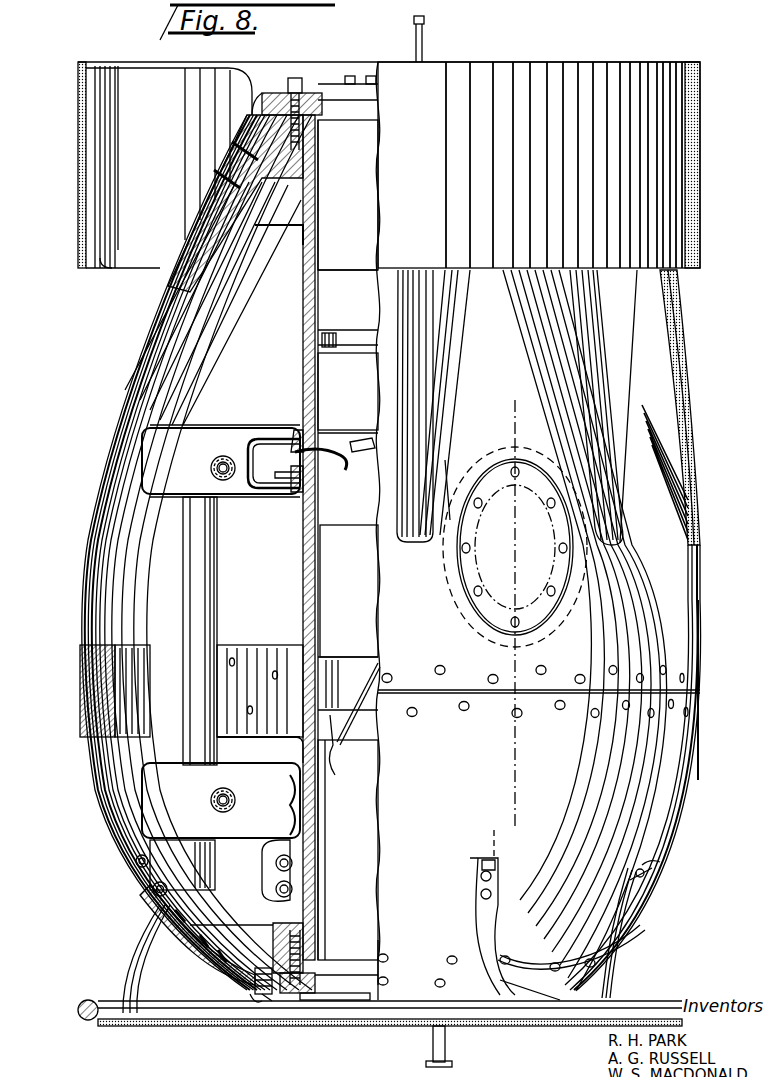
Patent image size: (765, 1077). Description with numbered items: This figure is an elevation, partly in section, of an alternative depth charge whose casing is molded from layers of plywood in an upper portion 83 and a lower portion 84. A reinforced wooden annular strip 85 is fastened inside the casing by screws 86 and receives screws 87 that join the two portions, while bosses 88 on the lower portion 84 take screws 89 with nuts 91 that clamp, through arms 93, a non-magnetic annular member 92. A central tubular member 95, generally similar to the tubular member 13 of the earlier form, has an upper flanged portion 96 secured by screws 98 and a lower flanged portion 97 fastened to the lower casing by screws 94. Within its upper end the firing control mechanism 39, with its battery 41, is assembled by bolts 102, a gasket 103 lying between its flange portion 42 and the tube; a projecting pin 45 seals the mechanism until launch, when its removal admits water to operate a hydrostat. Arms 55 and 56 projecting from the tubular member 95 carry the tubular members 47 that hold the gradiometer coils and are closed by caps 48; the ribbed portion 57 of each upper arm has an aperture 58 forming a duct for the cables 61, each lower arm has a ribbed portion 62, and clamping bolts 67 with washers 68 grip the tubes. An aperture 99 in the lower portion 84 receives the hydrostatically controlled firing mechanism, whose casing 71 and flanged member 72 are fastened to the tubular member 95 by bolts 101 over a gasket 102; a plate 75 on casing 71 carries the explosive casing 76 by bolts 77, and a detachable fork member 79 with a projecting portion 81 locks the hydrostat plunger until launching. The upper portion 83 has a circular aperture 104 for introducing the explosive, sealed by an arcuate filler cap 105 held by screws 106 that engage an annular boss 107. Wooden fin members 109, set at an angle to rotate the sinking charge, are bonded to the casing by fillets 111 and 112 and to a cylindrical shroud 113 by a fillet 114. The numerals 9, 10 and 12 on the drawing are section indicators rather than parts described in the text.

The section line 9- 9 is at (522, 434).
The section line 10- 10 is at (485, 828).
The section line 12- 12 is at (537, 410).
The tubular member 13 is at (612, 108).
The firing control mechanism 39 is at (348, 195).
The battery 41 is at (348, 381).
The flange portion 42 is at (292, 82).
The projecting pin 45 is at (426, 24).
The tubular members 47 is at (216, 583).
The caps 48 is at (212, 425).
The arms 55 is at (262, 440).
The arms 56 is at (265, 778).
The ribbed portion 57 is at (278, 492).
The aperture 58 is at (298, 432).
The cables 61 is at (333, 482).
The ribbed portion 62 is at (318, 800).
The bolt 67 is at (210, 474).
The washer 68 is at (210, 462).
The casing 71 is at (348, 850).
The flanged member 72 is at (375, 960).
The collar or plate 75 is at (358, 704).
The casing 76 is at (348, 617).
The bolts 77 is at (333, 755).
The detachable fork member 79 is at (410, 1026).
The projecting portion 81 is at (447, 1044).
The upper portion 83 is at (695, 572).
The lower portion 84 is at (700, 742).
The reinforced annular strip 85 is at (284, 648).
The screws 86 is at (80, 712).
The screws 87 is at (233, 658).
The raised portions or bosses 88 is at (134, 858).
The screws 89 is at (130, 876).
The nuts 91 is at (168, 891).
The annular member 92 is at (90, 998).
The arms 93 is at (140, 965).
The screws 94 is at (218, 968).
The tubular member 95 is at (303, 315).
The flanged portion 96 is at (303, 190).
The flanged portion 97 is at (255, 935).
The screws 98 is at (222, 150).
The aperture 99 is at (262, 1012).
The bolts 101 is at (310, 1002).
The gasket; bolts 102 is at (290, 95).
The gasket 103 is at (262, 100).
The aperture 104 is at (515, 615).
The filler cap 105 is at (555, 555).
The screws 106 is at (470, 585).
The annular member or boss 107 is at (480, 470).
The fin members 109 is at (700, 325).
The fillet 111 is at (410, 348).
The fillet 112 is at (445, 492).
The cylindrical member or shroud 113 is at (78, 180).
The fillet 114 is at (120, 262).